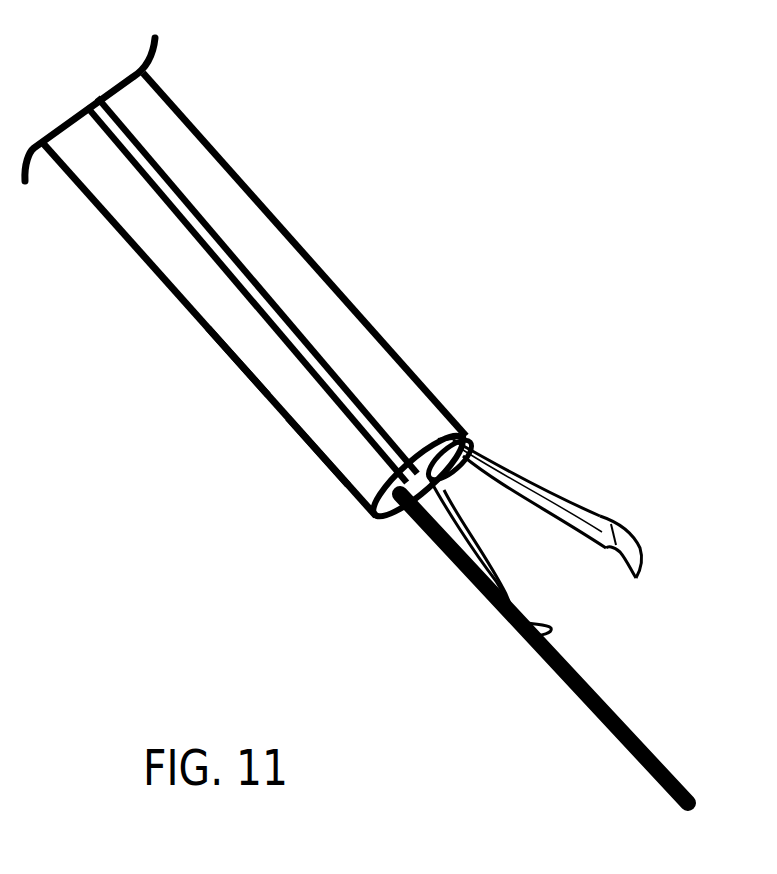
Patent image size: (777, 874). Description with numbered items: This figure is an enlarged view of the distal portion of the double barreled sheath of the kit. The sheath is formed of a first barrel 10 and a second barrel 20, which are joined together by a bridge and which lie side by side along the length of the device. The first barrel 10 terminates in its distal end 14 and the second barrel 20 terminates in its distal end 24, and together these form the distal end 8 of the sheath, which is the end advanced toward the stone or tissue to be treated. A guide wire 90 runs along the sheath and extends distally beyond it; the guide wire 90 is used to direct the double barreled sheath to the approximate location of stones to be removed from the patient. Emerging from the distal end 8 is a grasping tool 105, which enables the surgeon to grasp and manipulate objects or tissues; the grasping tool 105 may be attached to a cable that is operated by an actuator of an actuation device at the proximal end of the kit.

The distal end 8 is at (78, 100).
The first barrel 10 is at (322, 266).
The distal end 14 is at (379, 367).
The second barrel 20 is at (230, 327).
The distal end 24 is at (311, 420).
The guide wire 90 is at (571, 702).
The grasping tool 105 is at (523, 477).